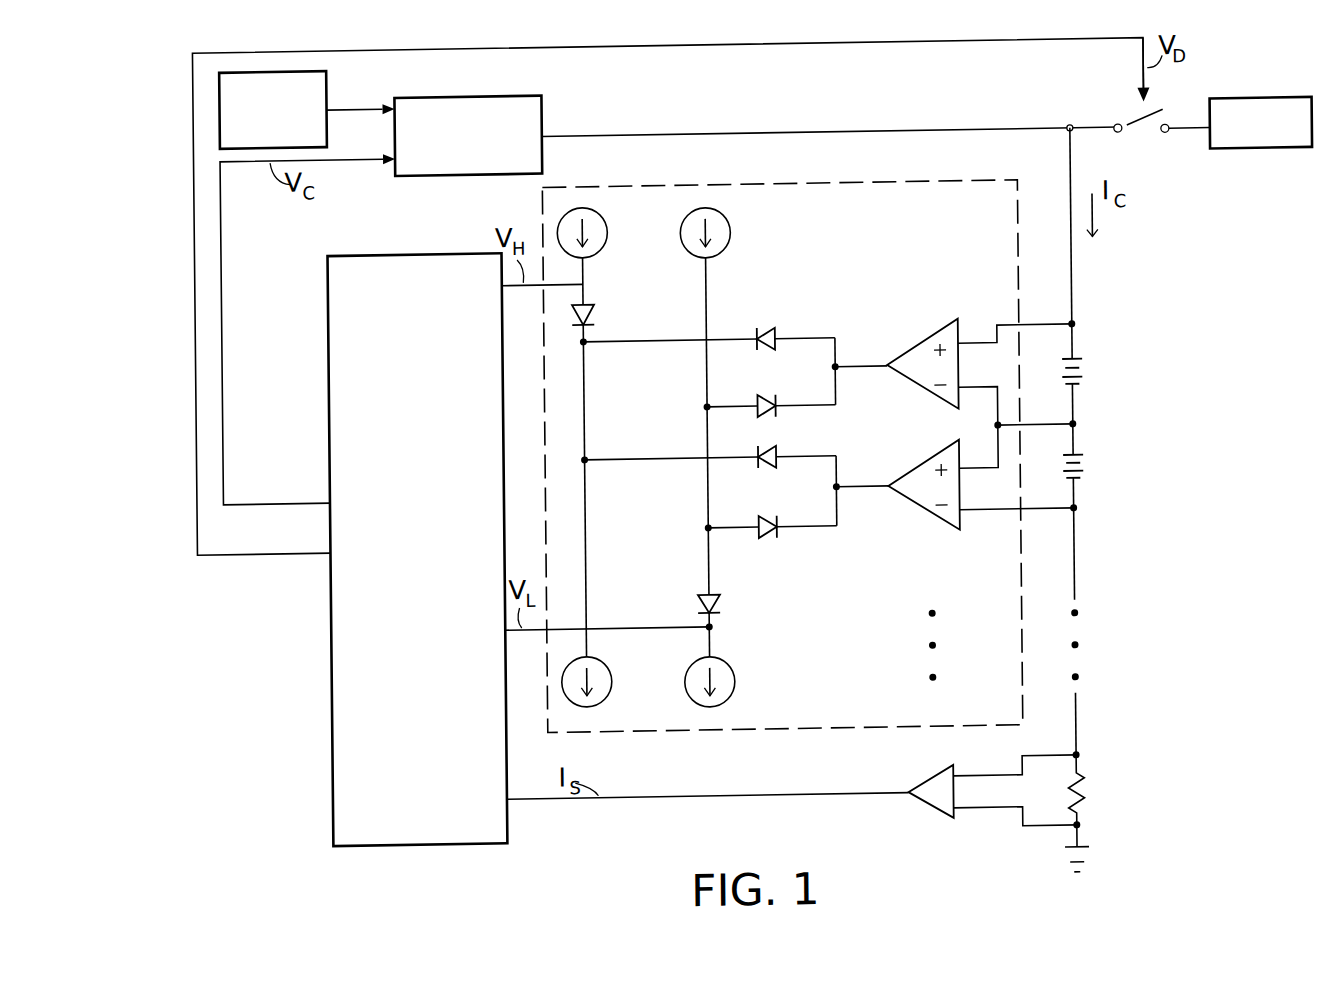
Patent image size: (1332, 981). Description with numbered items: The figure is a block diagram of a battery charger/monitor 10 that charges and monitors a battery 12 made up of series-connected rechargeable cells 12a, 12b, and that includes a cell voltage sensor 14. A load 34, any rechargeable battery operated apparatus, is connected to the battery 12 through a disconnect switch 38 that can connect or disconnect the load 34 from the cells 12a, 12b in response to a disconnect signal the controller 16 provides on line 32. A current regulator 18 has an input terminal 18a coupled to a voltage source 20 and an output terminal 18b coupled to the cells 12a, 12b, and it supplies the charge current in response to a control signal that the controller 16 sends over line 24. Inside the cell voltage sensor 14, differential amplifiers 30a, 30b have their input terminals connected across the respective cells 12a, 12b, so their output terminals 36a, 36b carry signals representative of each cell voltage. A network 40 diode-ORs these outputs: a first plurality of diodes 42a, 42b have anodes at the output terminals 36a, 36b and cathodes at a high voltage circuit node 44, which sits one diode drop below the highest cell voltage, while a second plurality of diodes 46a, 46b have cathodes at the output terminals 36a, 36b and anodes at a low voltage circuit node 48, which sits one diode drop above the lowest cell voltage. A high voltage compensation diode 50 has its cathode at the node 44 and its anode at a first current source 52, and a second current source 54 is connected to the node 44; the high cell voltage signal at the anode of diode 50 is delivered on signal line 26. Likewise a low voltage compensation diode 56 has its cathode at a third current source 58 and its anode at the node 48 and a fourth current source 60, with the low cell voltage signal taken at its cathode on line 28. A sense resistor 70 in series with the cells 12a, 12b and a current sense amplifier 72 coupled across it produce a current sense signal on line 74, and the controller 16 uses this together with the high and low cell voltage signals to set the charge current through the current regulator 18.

The battery charger/monitor 10 is at (172, 147).
The battery 12 is at (1106, 441).
The rechargeable battery cell 12a is at (1093, 369).
The rechargeable battery cell 12b is at (1094, 466).
The cell voltage sensor 14 is at (851, 187).
The controller 16 is at (375, 248).
The current regulator 18 is at (486, 93).
The input terminal 18a is at (393, 112).
The output terminal 18b is at (550, 131).
The voltage source 20 is at (334, 71).
The control voltage line 24 is at (351, 157).
The signal line 26 is at (539, 289).
The line 28 is at (541, 635).
The differential amplifier 30a is at (946, 327).
The differential amplifier 30b is at (942, 449).
The line 32 is at (1141, 89).
The load 34 is at (1257, 106).
The output terminal 36a is at (890, 366).
The output terminal 36b is at (890, 486).
The disconnect switch 38 is at (1136, 130).
The network 40 is at (629, 430).
The diode 42a is at (771, 331).
The diode 42b is at (768, 451).
The high voltage circuit node 44 is at (591, 338).
The diode 46a is at (776, 398).
The diode 46b is at (763, 538).
The low voltage circuit node 48 is at (704, 528).
The high voltage compensation diode 50 is at (594, 310).
The first current source 52 is at (607, 213).
The second current source 54 is at (605, 701).
The low voltage compensation diode 56 is at (697, 605).
The third current source 58 is at (733, 702).
The fourth current source 60 is at (727, 211).
The sense resistor 70 is at (1087, 794).
The current sense amplifier 72 is at (939, 774).
The line 74 is at (619, 799).